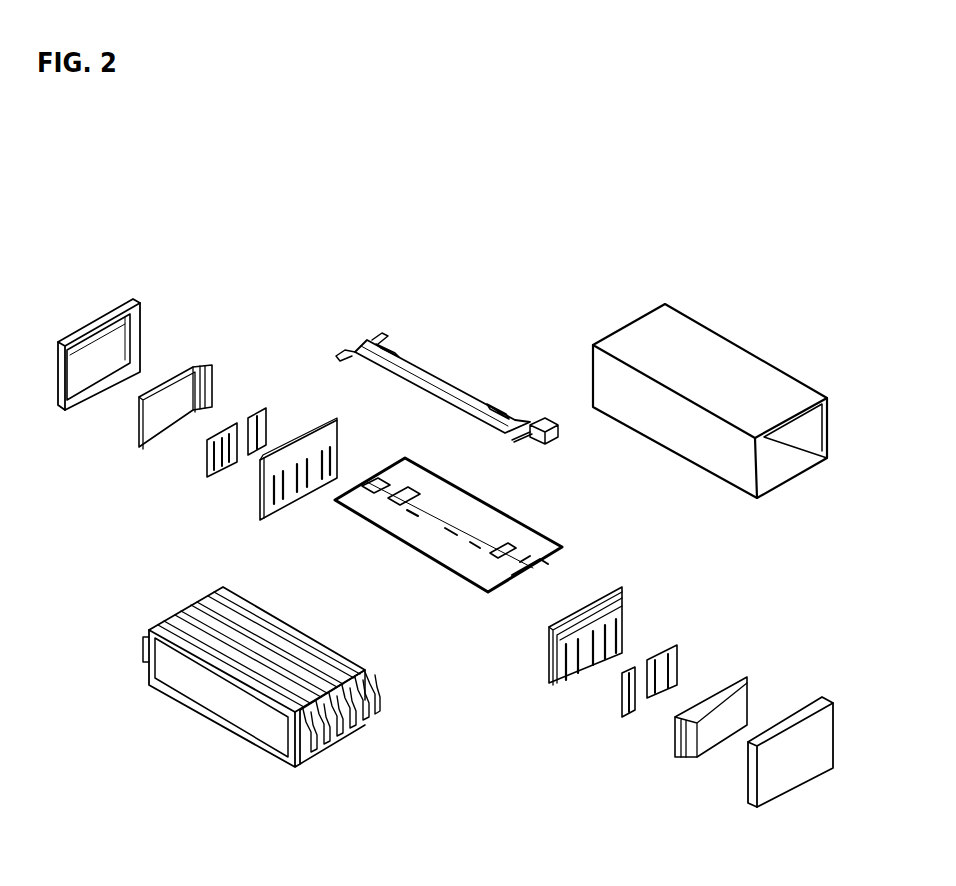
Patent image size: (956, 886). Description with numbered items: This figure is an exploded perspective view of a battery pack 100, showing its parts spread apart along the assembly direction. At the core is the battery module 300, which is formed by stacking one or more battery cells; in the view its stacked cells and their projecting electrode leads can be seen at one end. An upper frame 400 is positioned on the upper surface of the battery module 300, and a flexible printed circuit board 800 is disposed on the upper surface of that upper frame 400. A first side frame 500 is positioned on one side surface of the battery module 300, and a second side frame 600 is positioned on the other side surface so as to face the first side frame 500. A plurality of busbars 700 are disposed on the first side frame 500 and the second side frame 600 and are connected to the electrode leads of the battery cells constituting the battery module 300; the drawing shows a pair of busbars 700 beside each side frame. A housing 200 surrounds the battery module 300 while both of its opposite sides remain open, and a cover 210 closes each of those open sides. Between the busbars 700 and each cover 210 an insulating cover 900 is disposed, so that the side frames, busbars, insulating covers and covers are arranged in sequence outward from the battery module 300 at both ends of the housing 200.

The battery pack 100 is at (441, 150).
The housing 200 is at (729, 330).
The cover 210 is at (103, 312).
The battery module 300 is at (220, 731).
The upper frame 400 is at (415, 548).
The first side frame 500 is at (550, 682).
The second side frame 600 is at (260, 505).
The busbars 700 is at (218, 432).
The flexible printed circuit board 800 is at (426, 367).
The insulating cover 900 is at (138, 441).